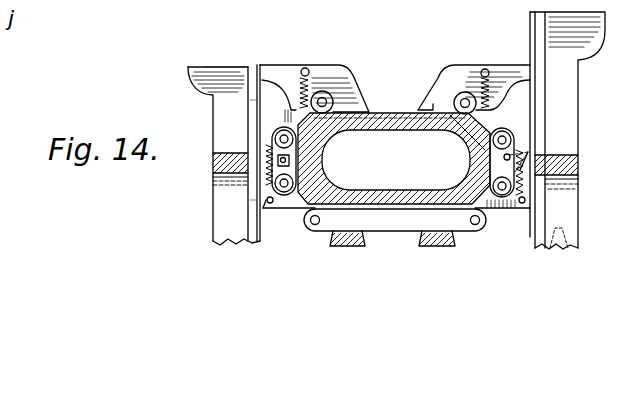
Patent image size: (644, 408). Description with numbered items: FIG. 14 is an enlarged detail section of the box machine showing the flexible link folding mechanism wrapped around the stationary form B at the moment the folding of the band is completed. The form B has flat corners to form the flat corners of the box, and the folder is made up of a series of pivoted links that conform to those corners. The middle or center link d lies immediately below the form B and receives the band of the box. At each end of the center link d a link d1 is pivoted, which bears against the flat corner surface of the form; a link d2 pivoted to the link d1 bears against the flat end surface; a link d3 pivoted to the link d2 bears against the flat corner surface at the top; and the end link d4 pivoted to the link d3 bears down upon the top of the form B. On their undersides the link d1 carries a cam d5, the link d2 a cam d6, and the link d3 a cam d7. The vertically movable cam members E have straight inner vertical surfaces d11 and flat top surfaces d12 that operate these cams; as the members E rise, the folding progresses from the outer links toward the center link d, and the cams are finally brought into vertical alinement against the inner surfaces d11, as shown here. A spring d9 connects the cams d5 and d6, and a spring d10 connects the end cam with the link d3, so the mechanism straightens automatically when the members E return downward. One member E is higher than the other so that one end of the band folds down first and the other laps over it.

The cam member E is at (203, 73).
The center link d is at (375, 210).
The link d1 is at (328, 190).
The link d2 is at (322, 157).
The link d3 is at (273, 125).
The end link d4 is at (350, 105).
The cam d5 is at (260, 209).
The cam d6 is at (270, 145).
The cam d7 is at (270, 97).
The spring d9 is at (273, 177).
The spring d10 is at (307, 97).
The inner vertical surface d11 is at (257, 106).
The flat top surface d12 is at (228, 67).
The form B is at (395, 150).